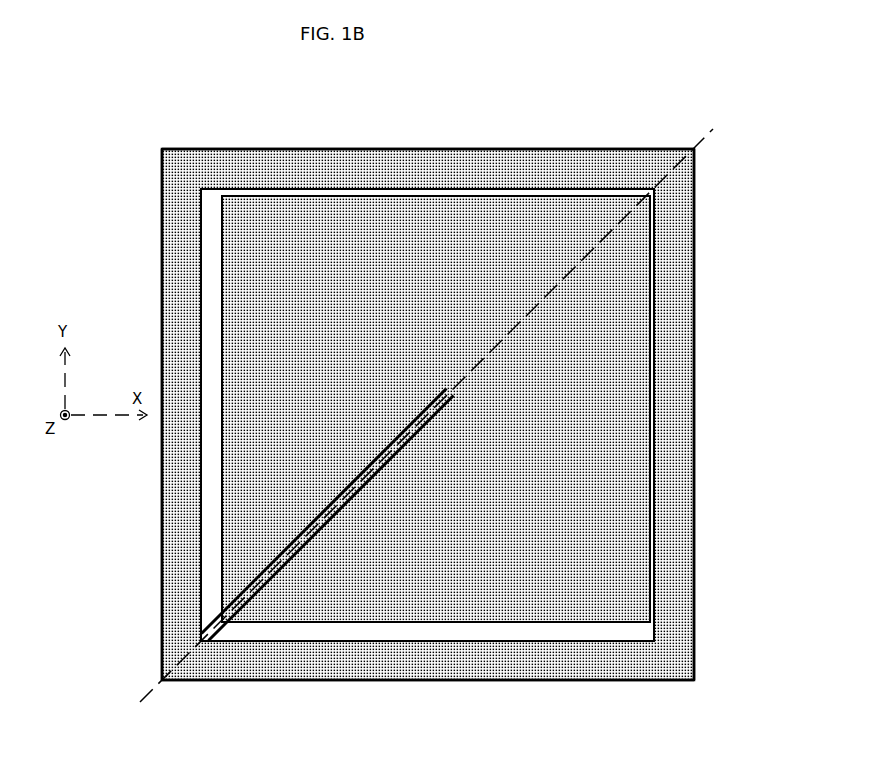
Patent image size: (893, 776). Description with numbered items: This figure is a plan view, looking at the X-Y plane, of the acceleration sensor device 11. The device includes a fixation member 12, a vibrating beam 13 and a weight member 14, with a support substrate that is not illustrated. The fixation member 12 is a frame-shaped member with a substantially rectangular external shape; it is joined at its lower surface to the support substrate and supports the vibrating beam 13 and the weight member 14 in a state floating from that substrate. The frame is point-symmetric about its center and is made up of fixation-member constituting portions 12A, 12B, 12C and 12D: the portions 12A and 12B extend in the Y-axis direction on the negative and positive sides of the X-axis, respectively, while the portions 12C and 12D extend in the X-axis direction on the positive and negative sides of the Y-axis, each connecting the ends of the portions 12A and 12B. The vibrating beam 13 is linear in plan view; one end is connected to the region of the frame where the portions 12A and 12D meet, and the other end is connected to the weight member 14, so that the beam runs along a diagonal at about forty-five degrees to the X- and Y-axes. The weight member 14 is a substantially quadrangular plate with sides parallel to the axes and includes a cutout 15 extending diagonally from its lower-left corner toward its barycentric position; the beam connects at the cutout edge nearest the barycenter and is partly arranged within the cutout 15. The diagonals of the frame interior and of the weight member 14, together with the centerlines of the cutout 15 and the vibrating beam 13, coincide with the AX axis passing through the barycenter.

The acceleration sensor device 11 is at (740, 156).
The fixation member 12 is at (162, 147).
The fixation-member constituting portion 12A is at (161, 262).
The fixation-member constituting portion 12B is at (694, 268).
The fixation-member constituting portion 12C is at (555, 148).
The fixation-member constituting portion 12D is at (567, 682).
The vibrating beam 13 is at (204, 634).
The weight member 14 is at (445, 597).
The cutout 15 is at (232, 623).
The AX axis AX is at (438, 406).